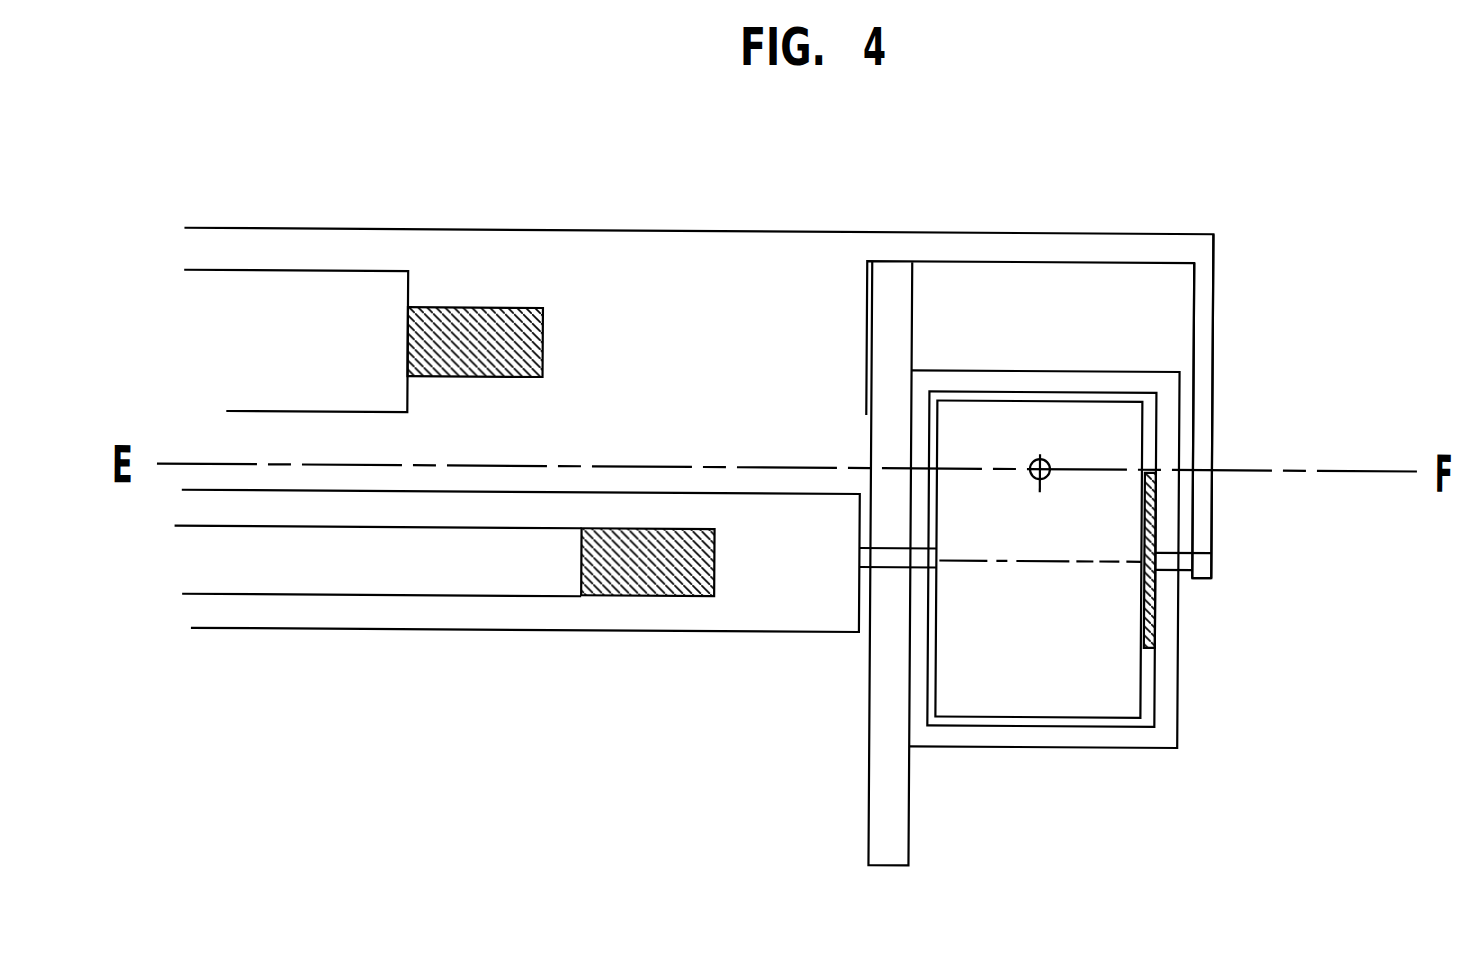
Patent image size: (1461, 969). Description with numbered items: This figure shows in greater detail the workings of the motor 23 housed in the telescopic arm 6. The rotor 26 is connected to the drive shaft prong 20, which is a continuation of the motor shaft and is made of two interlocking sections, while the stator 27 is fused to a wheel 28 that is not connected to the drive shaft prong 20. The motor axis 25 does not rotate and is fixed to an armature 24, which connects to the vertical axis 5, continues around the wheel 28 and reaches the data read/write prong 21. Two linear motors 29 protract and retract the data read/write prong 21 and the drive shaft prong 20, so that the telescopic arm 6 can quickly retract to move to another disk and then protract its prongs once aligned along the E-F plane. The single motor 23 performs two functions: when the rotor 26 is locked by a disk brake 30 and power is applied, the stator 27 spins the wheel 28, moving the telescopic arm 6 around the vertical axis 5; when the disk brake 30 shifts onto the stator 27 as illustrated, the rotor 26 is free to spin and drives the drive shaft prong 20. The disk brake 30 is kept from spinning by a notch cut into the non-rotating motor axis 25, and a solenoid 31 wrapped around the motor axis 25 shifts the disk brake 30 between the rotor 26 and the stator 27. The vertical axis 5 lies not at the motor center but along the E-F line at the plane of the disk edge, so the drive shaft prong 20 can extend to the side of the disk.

The vertical axis 5 is at (1038, 453).
The telescopic arm 6 is at (483, 450).
The drive shaft prong 20 is at (595, 599).
The data read/write prong 21 is at (680, 250).
The motor 23 is at (1028, 733).
The armature 24 is at (1204, 292).
The motor axis 25 is at (1197, 565).
The rotor 26 is at (1110, 665).
The stator 27 is at (1168, 701).
The wheel 28 is at (880, 831).
The linear motors 29 is at (697, 537).
The disk brake 30 is at (1156, 515).
The solenoid 31 is at (1040, 596).